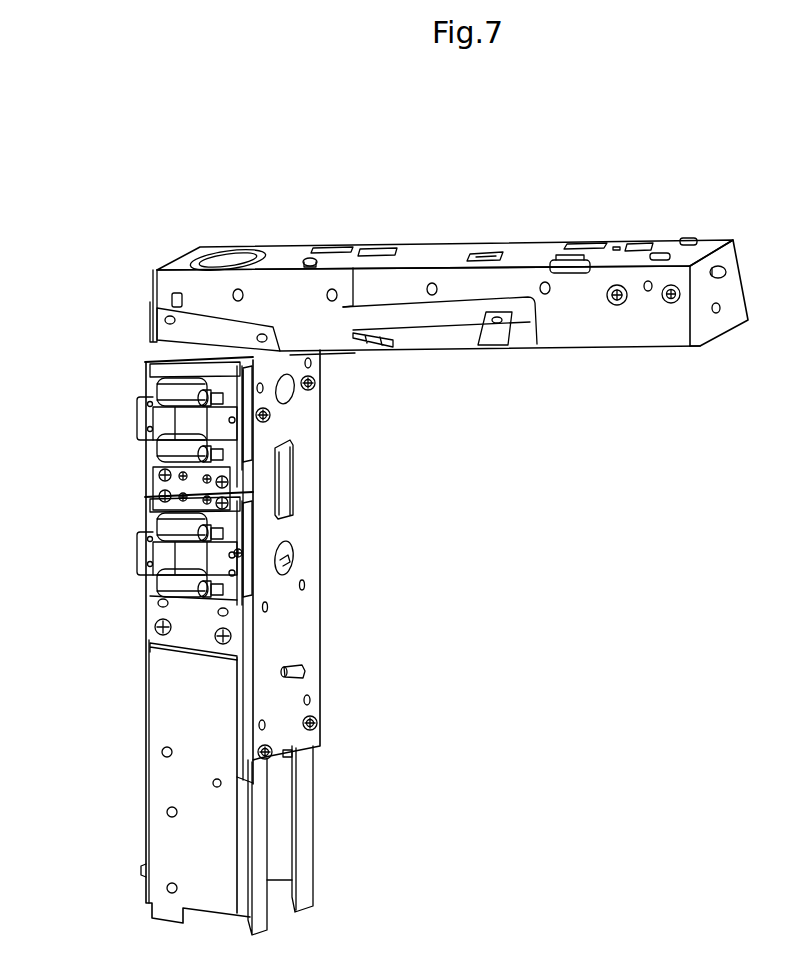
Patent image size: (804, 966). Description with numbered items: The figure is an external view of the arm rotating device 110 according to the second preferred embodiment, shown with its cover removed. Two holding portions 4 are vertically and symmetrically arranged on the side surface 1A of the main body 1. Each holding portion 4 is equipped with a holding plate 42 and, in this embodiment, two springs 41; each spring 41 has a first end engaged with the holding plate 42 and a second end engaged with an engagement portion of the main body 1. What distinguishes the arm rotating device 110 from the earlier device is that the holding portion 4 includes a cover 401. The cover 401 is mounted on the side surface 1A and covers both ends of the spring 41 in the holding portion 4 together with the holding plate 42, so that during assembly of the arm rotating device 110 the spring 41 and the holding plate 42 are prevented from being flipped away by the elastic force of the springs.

The arm rotating device 110 is at (660, 151).
The main body 1 is at (305, 492).
The side surface 1A is at (158, 610).
The holding portion 4 is at (119, 405).
The spring 41 is at (162, 392).
The holding plate 42 is at (168, 460).
The cover 401 is at (268, 417).